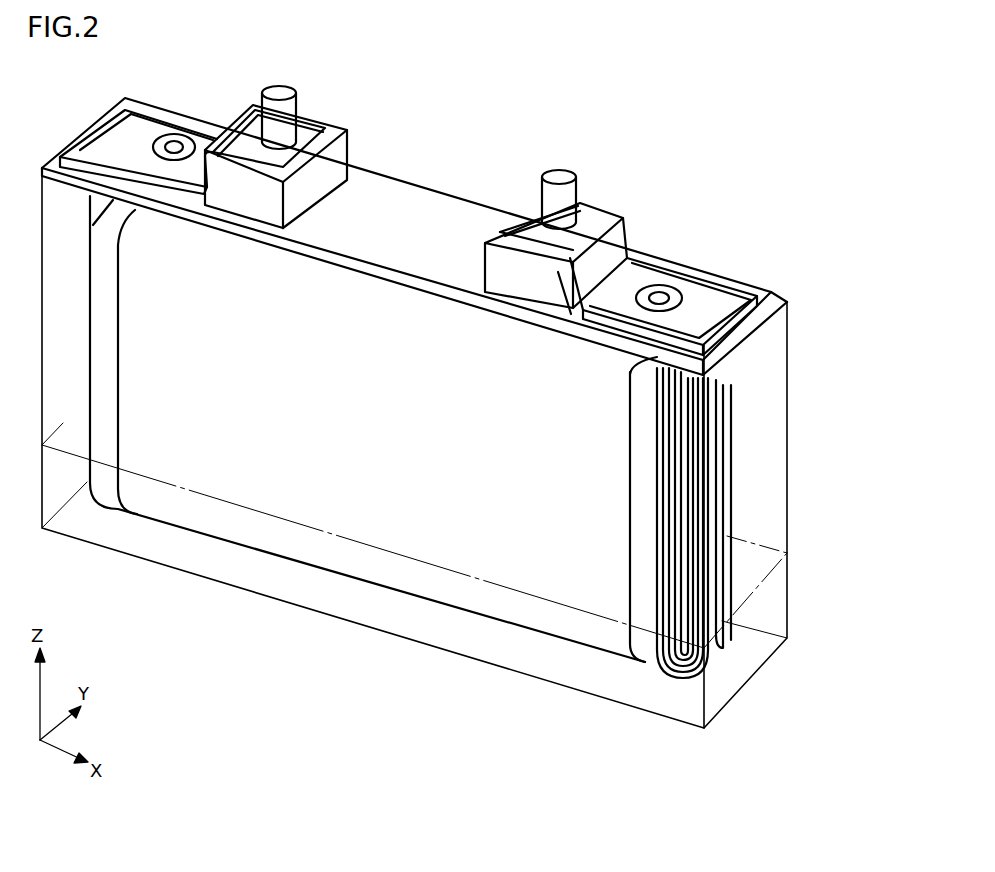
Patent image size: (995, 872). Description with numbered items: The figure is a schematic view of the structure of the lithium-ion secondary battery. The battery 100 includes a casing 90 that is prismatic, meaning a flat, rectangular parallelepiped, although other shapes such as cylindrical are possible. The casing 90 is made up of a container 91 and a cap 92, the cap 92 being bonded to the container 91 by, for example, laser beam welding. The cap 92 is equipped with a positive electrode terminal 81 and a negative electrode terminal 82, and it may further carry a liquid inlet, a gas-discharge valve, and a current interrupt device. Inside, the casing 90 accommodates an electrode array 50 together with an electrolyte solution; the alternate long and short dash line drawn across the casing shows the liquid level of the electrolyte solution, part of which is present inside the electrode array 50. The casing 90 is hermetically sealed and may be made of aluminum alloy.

The battery 100 is at (493, 100).
The electrode array 50 is at (368, 447).
The positive electrode terminal 81 is at (558, 185).
The negative electrode terminal 82 is at (277, 100).
The casing 90 is at (843, 262).
The container 91 is at (788, 347).
The cap 92 is at (772, 298).